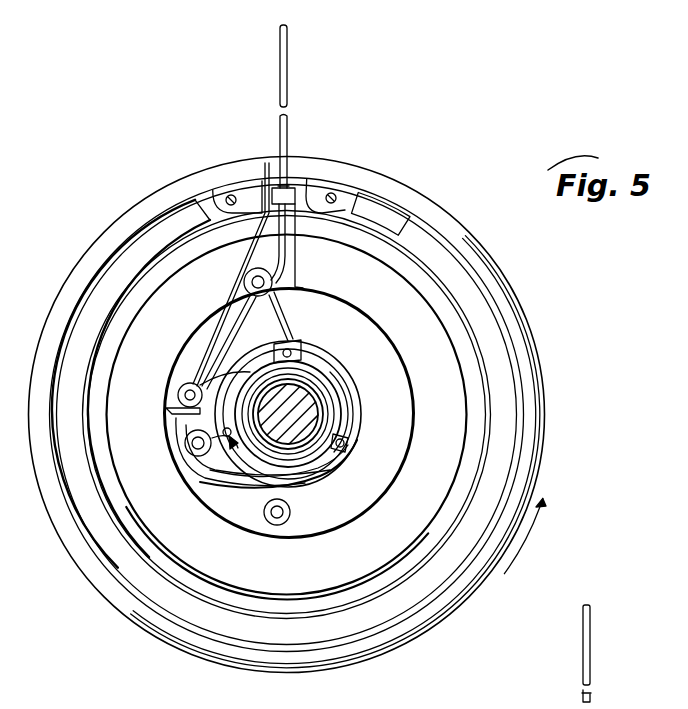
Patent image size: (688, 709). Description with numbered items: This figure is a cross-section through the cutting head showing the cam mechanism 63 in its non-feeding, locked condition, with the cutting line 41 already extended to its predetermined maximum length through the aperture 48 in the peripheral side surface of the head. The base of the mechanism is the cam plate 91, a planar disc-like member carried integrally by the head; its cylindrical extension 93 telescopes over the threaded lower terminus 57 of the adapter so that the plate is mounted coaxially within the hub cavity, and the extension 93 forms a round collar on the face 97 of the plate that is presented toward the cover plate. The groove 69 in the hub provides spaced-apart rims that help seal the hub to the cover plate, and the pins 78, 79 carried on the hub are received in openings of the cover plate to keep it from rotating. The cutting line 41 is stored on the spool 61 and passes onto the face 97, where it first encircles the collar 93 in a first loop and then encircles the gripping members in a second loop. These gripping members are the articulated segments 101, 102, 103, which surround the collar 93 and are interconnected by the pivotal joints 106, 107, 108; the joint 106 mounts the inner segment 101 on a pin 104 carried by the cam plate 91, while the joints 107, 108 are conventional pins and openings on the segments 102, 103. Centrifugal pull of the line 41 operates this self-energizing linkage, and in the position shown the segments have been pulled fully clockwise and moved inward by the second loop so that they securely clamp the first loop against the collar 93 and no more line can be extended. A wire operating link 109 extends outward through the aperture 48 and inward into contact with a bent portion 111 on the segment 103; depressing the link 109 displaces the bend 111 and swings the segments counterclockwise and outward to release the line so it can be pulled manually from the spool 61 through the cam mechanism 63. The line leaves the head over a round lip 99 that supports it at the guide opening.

The cutting line 41 is at (290, 66).
The aperture 48 is at (253, 185).
The lower terminus 57 is at (334, 360).
The spool 61 is at (408, 288).
The cam mechanism 63 is at (366, 420).
The groove 69 is at (405, 228).
The pin 78 is at (230, 195).
The pin 79 is at (334, 193).
The cam plate 91 is at (302, 540).
The lower cylindrical extension 93 is at (302, 400).
The face 97 is at (376, 470).
The round lip 99 is at (287, 188).
The inner segment 101 is at (230, 388).
The articulated segment 102 is at (362, 405).
The articulated segment 103 is at (318, 470).
The pin 104 is at (180, 438).
The pivotal joint 106 is at (212, 476).
The pivotal joint 107 is at (289, 344).
The pivotal joint 108 is at (348, 444).
The wire operating link 109 is at (245, 258).
The bent portion 111 is at (195, 462).